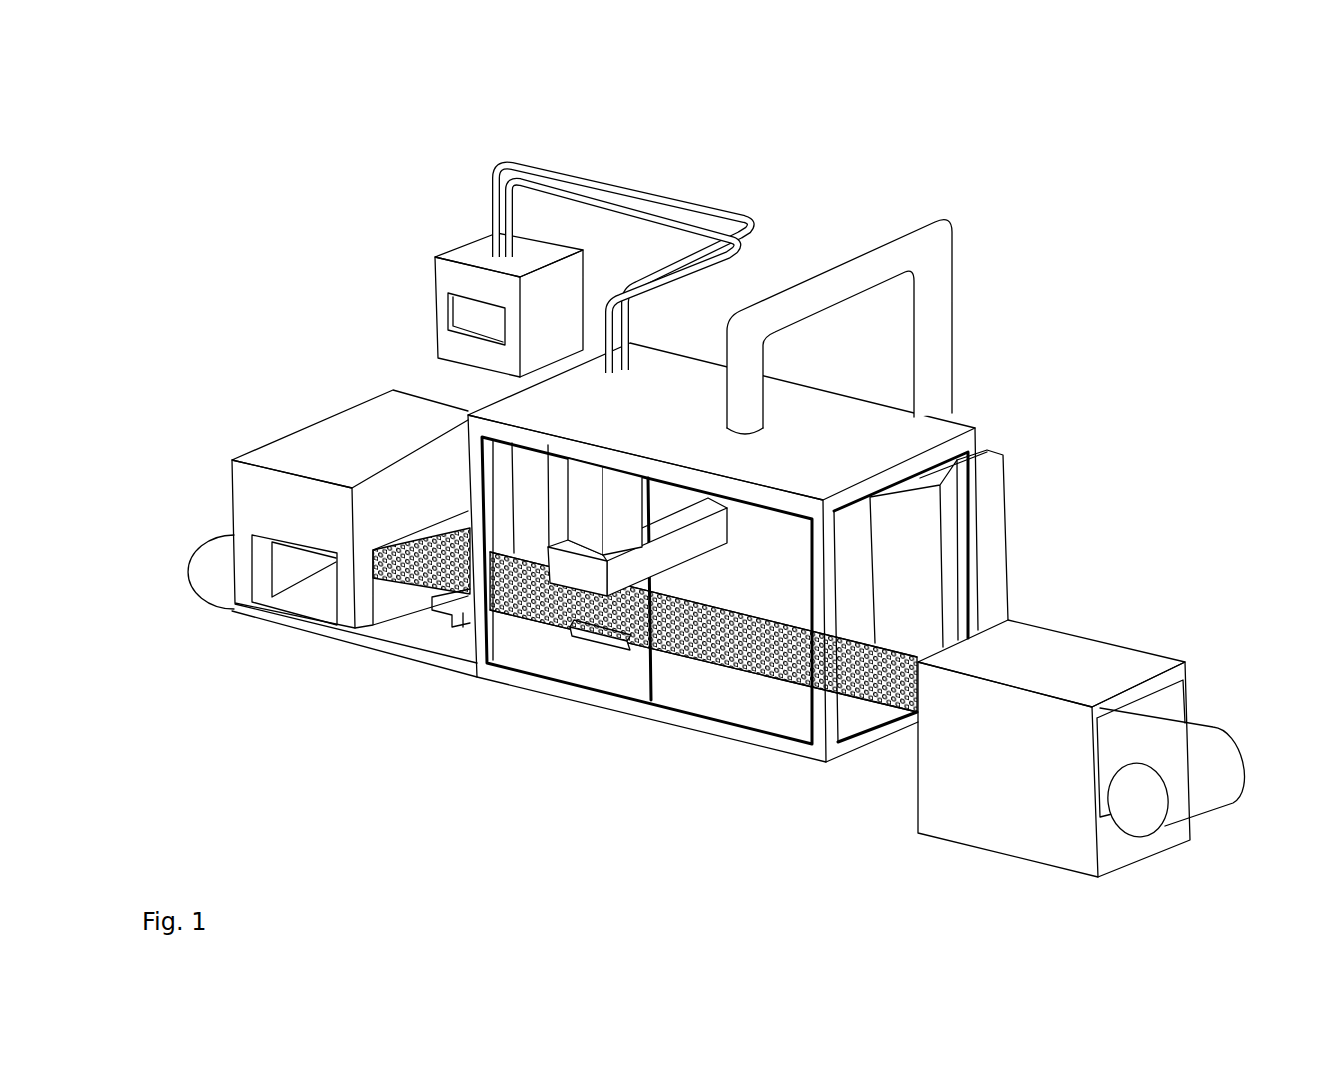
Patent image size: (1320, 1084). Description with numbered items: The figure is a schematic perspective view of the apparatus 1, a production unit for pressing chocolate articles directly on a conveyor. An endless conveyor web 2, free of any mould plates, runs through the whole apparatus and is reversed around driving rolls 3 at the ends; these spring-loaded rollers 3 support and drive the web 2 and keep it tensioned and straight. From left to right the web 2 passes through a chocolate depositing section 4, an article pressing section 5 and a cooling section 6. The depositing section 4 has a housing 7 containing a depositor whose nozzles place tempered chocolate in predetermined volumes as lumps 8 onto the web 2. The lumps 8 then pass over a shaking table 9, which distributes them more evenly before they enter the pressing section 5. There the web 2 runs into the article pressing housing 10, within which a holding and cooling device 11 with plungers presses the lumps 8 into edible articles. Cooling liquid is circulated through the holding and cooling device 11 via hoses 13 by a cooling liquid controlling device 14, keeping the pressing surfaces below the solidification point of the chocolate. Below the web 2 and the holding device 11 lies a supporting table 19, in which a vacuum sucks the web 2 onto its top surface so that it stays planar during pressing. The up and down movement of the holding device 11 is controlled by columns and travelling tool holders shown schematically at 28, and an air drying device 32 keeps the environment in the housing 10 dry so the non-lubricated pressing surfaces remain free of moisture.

The apparatus 1 is at (348, 188).
The conveyor web 2 is at (1170, 733).
The driving rolls 3 is at (212, 572).
The chocolate depositing section 4 is at (220, 295).
The article pressing section 5 is at (888, 169).
The cooling section 6 is at (1180, 520).
The housing 7 is at (295, 452).
The chocolate lumps 8 is at (417, 588).
The shaking table 9 is at (457, 607).
The article pressing housing 10 is at (910, 438).
The holding and cooling device 11 is at (576, 572).
The hoses 13 is at (600, 180).
The cooling liquid controlling device 14 is at (432, 302).
The supporting table 19 is at (600, 600).
The columns and travelling tool holders 28 is at (593, 500).
The air drying device 32 is at (995, 498).